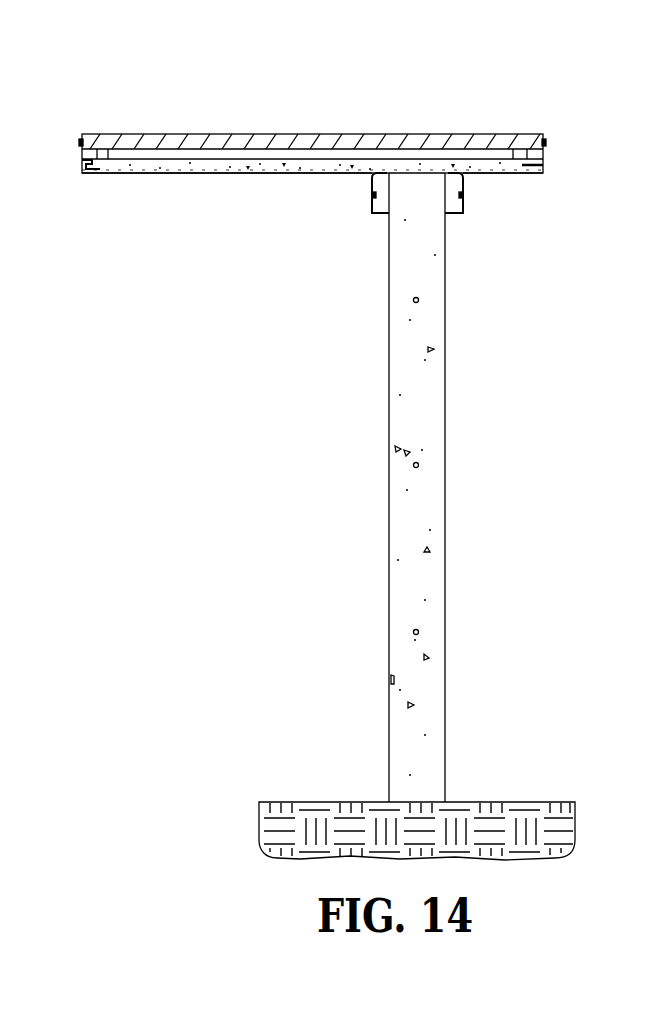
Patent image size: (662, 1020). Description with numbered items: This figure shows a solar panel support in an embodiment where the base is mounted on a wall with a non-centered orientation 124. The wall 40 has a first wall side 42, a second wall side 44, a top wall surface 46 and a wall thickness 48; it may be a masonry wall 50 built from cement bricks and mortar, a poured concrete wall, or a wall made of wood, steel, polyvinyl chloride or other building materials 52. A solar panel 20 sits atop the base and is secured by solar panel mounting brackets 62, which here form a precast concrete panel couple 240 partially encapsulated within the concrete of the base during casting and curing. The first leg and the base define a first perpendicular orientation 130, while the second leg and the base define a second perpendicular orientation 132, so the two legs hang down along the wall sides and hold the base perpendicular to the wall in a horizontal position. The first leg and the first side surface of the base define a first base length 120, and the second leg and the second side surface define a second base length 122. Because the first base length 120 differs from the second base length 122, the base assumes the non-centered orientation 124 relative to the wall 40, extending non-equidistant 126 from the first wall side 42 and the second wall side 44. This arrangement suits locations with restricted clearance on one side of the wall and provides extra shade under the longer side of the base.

The solar panel 20 is at (203, 133).
The top wall surface 46 is at (412, 174).
The solar panel mounting brackets 62 is at (82, 150).
The precast concrete panel couple 240 is at (82, 162).
The non-centered orientation 124 is at (103, 178).
The non-equidistant 126 is at (140, 176).
The second base length 122 is at (172, 175).
The first base length 120 is at (503, 176).
The first perpendicular orientation 130 is at (373, 211).
The second perpendicular orientation 132 is at (463, 211).
The wall 40 is at (446, 355).
The first wall side 42 is at (389, 402).
The second wall side 44 is at (446, 422).
The wall thickness 48 is at (446, 518).
The masonry wall 50 is at (446, 657).
The other building materials 52 is at (446, 718).